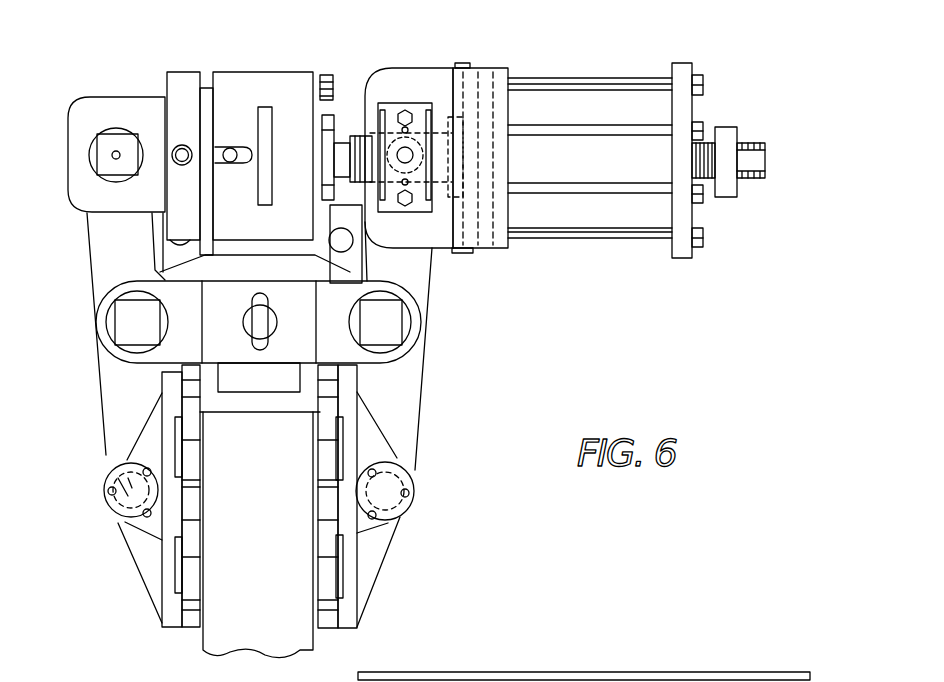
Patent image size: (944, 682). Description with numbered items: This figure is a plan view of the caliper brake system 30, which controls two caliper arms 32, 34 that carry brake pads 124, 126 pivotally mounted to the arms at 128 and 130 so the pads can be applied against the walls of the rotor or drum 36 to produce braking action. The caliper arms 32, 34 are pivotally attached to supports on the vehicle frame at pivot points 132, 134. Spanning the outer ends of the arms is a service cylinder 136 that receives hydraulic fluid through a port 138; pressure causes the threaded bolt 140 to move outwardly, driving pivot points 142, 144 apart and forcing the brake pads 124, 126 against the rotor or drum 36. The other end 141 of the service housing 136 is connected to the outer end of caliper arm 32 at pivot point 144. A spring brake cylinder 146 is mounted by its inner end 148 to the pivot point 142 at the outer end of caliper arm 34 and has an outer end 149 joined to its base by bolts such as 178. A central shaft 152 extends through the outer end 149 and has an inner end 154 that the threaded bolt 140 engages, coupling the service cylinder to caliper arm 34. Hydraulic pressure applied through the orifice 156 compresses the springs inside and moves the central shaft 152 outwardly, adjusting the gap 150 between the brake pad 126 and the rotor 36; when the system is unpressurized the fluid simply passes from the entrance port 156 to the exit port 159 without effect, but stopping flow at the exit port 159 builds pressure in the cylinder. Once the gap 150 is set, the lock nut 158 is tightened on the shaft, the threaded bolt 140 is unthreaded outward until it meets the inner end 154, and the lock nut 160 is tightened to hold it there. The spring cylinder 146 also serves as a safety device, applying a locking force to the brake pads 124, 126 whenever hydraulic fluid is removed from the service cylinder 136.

The caliper brake system 30 is at (510, 389).
The caliper arm 32 is at (128, 574).
The caliper arm 34 is at (392, 578).
The rotor or drum 36 is at (272, 624).
The brake pad 124 is at (258, 535).
The brake pad 126 is at (260, 440).
The pivot mounting 128 is at (108, 505).
The pivot mounting 130 is at (416, 468).
The pivot point 132 is at (127, 325).
The pivot point 134 is at (392, 323).
The service cylinder 136 is at (256, 72).
The port 138 is at (182, 148).
The threaded bolt 140 is at (353, 178).
The other end of service housing 141 is at (68, 128).
The pivot point 142 is at (407, 147).
The pivot point 144 is at (116, 150).
The spring brake cylinder 146 is at (580, 58).
The inner end (mounting arm) 148 is at (390, 68).
The outer end 149 is at (681, 63).
The gap 150 is at (198, 626).
The central shaft 152 is at (765, 160).
The inner end of central shaft 154 is at (421, 233).
The orifice (entrance port) 156 is at (487, 252).
The lock nut 158 is at (727, 127).
The exit port 159 is at (322, 72).
The lock nut 160 is at (331, 117).
The bolt 178 is at (623, 190).